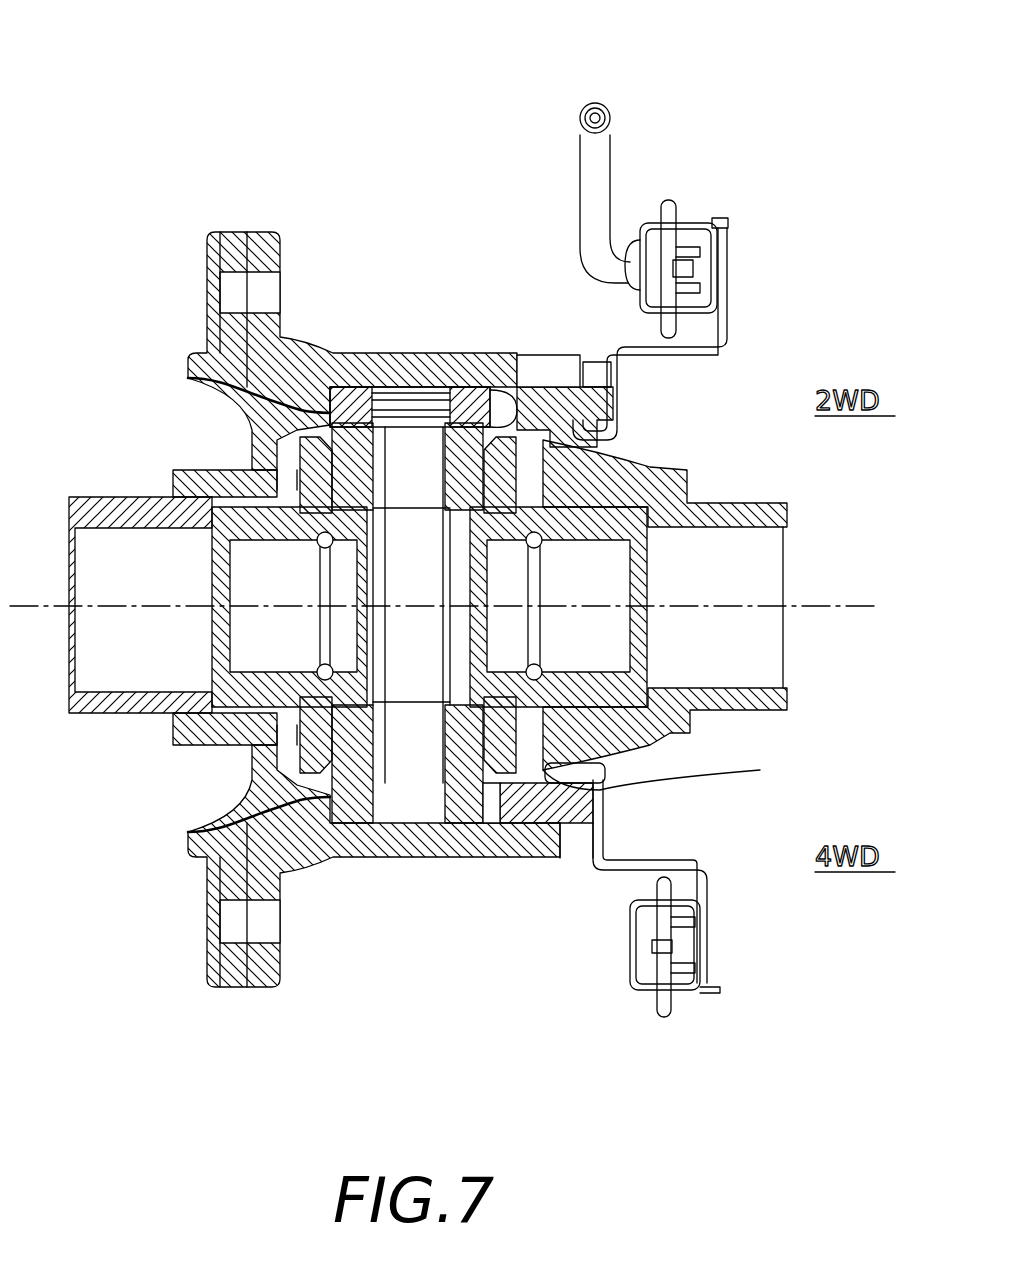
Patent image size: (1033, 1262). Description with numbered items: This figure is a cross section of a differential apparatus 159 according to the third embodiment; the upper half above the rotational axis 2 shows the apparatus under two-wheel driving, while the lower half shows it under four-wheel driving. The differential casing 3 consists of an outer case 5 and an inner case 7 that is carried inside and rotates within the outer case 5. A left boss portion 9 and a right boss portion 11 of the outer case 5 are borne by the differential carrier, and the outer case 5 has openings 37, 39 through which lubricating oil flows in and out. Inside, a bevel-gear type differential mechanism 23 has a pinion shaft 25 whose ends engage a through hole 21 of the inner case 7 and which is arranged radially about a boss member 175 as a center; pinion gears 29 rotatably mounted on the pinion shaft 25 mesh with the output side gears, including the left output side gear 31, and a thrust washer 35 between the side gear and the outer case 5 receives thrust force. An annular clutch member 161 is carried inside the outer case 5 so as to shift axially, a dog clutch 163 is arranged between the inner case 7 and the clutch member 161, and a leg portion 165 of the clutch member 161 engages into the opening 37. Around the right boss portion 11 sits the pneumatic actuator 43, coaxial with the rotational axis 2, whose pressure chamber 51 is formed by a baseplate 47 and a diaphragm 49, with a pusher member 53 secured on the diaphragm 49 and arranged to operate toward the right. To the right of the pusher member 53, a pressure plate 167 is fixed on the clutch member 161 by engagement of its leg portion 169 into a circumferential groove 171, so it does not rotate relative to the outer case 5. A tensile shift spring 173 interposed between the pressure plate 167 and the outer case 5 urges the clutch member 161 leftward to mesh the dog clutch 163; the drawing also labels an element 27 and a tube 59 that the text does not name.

The rotational axis 2 is at (850, 612).
The differential casing 3 is at (324, 220).
The outer case 5 is at (240, 218).
The inner case 7 is at (352, 380).
The left boss portion 9 is at (120, 496).
The right boss portion 11 is at (753, 502).
The through hole 21 is at (358, 798).
The bevel-gear type differential mechanism 23 is at (424, 222).
The pinion shaft 25 is at (425, 490).
The spline ring 27 is at (455, 388).
The pinion gear 29 is at (358, 458).
The left output side gear 31 is at (300, 532).
The thrust washer 35 is at (290, 695).
The opening 37 is at (528, 362).
The opening 39 is at (195, 396).
The pneumatic actuator 43 is at (735, 118).
The baseplate 47 is at (645, 215).
The diaphragm 49 is at (690, 235).
The pressure chamber 51 is at (680, 300).
The pusher member 53 is at (720, 200).
The tube 59 is at (582, 190).
The differential apparatus 159 is at (474, 125).
The clutch member 161 is at (530, 872).
The dog clutch 163 is at (500, 360).
The leg portion 165 is at (555, 864).
The pressure plate 167 is at (712, 858).
The leg portion 169 is at (605, 805).
The circumferential groove 171 is at (545, 775).
The tensile shift spring 173 is at (597, 356).
The boss member 175 is at (447, 594).